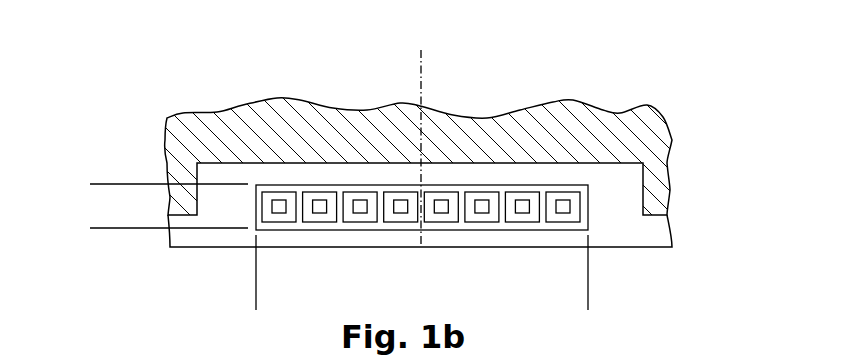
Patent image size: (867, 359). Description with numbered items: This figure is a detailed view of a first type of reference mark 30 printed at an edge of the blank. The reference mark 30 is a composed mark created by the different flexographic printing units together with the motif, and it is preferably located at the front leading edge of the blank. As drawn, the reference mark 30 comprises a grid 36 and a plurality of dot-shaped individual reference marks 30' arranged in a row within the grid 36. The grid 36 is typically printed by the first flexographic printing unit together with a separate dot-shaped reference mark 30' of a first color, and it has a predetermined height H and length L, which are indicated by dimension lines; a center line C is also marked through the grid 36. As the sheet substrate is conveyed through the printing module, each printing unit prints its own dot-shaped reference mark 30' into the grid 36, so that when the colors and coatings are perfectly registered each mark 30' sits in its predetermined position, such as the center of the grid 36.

The reference mark 30 is at (396, 178).
The individual reference mark 30' is at (405, 133).
The grid 36 is at (588, 205).
The centre line C is at (421, 72).
The height H is at (114, 130).
The length L is at (588, 285).